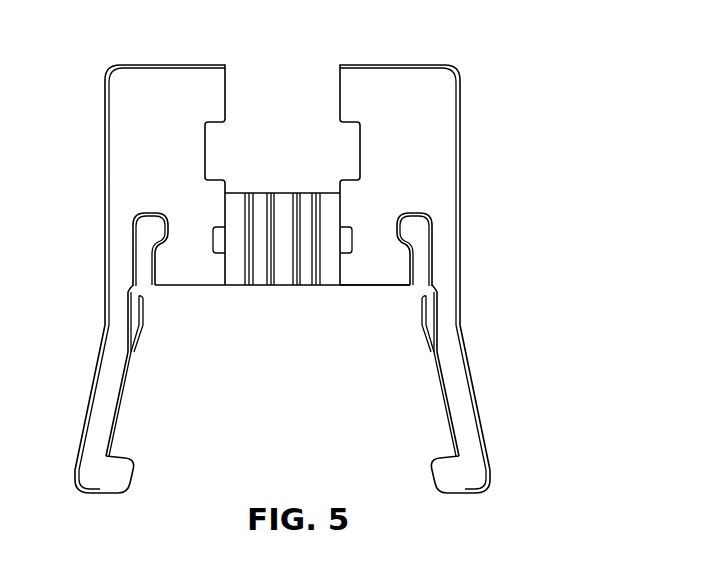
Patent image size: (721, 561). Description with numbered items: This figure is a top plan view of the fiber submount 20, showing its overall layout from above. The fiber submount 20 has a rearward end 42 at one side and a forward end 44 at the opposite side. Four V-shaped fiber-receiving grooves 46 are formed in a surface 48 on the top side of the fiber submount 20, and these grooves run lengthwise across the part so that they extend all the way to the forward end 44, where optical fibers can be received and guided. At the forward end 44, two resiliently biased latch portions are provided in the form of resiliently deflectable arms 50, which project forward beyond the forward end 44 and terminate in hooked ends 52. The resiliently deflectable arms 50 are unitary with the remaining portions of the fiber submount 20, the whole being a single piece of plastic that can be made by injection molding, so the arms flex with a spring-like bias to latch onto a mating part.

The fiber submount 20 is at (596, 172).
The rearward end 42 is at (403, 65).
The forward end 44 is at (381, 285).
The V-shaped fiber-receiving grooves 46 is at (325, 315).
The surface 48 is at (286, 193).
The resiliently deflectable arms 50 is at (88, 389).
The hooked ends 52 is at (122, 489).